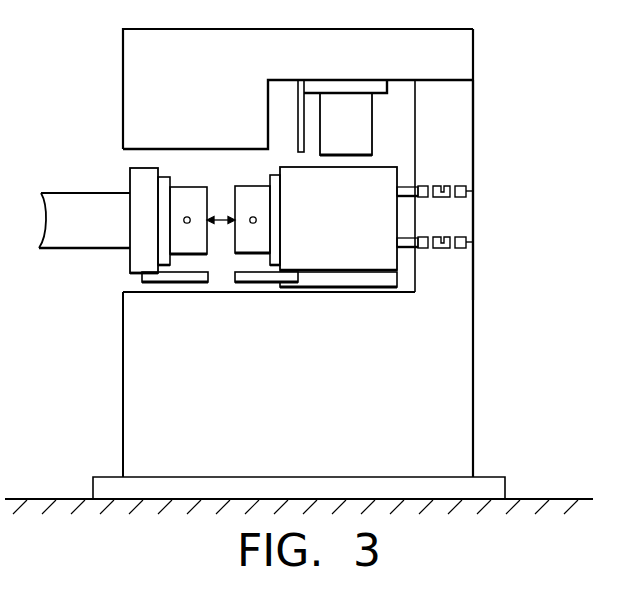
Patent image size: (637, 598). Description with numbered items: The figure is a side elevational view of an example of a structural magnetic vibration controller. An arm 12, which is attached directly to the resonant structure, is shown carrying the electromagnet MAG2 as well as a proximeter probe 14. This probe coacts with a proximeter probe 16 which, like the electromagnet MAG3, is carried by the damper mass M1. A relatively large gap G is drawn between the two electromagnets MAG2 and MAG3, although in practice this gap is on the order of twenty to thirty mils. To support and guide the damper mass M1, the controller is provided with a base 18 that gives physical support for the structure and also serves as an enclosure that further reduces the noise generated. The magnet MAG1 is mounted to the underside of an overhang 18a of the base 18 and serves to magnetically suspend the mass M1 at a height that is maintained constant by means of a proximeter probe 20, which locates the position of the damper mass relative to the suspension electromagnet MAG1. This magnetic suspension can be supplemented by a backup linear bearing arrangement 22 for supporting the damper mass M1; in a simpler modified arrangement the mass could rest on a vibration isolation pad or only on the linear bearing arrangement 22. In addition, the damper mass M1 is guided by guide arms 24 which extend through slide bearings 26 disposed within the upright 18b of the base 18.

The arm 12 is at (98, 231).
The proximeter probe 14 is at (192, 281).
The proximeter probe 16 is at (246, 283).
The base 18 is at (312, 404).
The overhang 18a is at (243, 31).
The upright 18b is at (476, 119).
The proximeter probe 20 is at (302, 113).
The backup linear bearing arrangement 22 is at (349, 281).
The guide arms 24 is at (407, 184).
The slide bearings 26 is at (477, 192).
The gap G is at (218, 224).
The damper mass M1 is at (333, 218).
The suspension electromagnet MAG1 is at (345, 117).
The electromagnet MAG2 is at (187, 186).
The electromagnet MAG3 is at (247, 183).